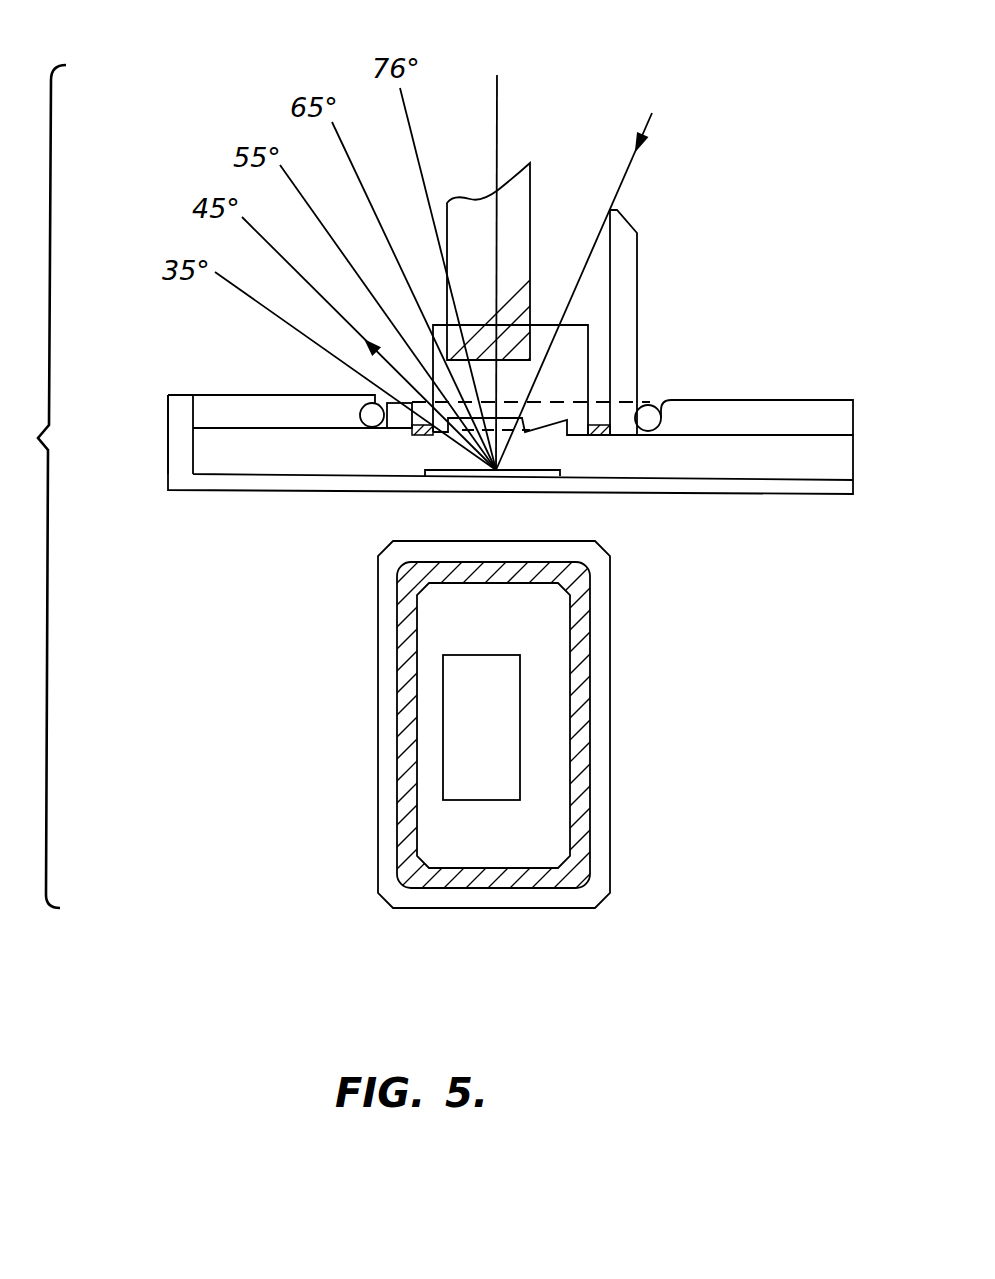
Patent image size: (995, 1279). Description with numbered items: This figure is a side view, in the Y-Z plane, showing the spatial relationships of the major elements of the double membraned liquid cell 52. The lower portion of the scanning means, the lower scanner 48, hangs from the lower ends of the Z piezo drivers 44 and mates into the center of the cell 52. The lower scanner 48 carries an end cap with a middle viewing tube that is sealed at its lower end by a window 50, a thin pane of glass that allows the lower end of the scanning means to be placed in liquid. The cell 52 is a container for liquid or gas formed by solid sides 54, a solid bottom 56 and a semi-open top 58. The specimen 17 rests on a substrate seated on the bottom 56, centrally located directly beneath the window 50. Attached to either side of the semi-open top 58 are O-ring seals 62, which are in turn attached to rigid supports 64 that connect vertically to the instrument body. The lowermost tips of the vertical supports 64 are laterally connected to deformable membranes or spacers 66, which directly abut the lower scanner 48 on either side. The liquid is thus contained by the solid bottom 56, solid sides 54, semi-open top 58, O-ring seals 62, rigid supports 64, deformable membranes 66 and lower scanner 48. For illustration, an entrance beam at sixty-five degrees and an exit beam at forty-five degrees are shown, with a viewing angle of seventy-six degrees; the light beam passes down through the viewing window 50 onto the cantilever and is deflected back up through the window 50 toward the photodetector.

The specimen 17 is at (562, 473).
The Z piezo drivers 44 is at (535, 193).
The lower scanner 48 is at (577, 323).
The window 50 is at (458, 428).
The double membraned liquid cell 52 is at (140, 395).
The solid sides 54 is at (177, 442).
The solid bottom 56 is at (793, 487).
The semi-open top 58 is at (705, 410).
The O-ring seals 62 is at (363, 410).
The rigid supports 64 is at (637, 250).
The deformable membrane or spacer 66 is at (603, 430).